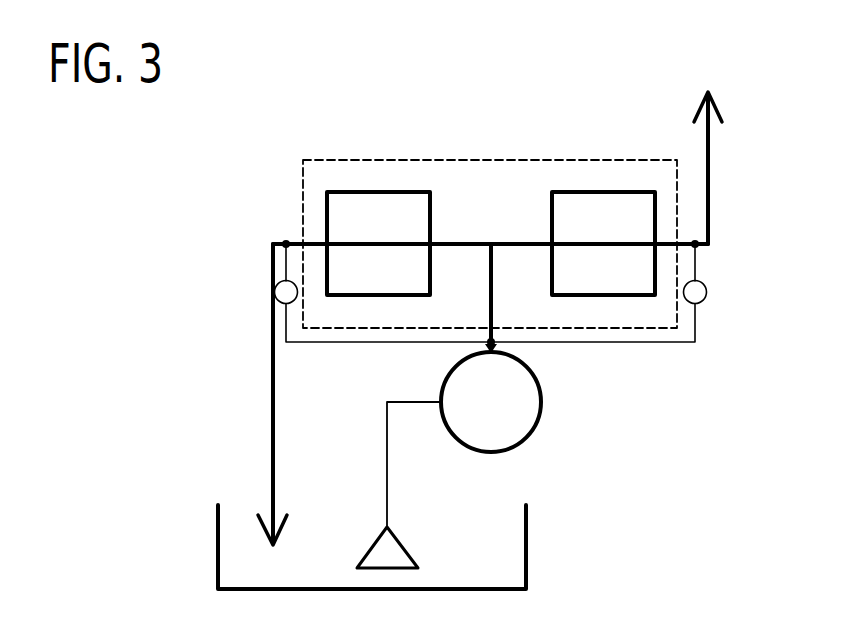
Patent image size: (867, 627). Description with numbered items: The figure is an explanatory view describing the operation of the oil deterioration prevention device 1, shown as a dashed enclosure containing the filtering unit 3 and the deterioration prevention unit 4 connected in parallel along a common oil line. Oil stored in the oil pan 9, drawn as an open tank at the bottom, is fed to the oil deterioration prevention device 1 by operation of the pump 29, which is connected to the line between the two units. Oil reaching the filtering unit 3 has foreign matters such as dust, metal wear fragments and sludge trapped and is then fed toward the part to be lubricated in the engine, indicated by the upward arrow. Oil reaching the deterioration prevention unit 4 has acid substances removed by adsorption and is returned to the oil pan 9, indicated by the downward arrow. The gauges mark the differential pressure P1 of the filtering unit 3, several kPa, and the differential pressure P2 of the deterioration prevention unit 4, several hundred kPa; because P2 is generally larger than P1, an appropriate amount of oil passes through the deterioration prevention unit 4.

The oil deterioration prevention device 1 is at (469, 151).
The filtering unit 3 is at (620, 192).
The deterioration prevention unit 4 is at (378, 192).
The oil pan 9 is at (527, 535).
The pump 29 is at (542, 408).
The differential pressure of the filtering unit P1 is at (707, 291).
The differential pressure of the deterioration prevention unit P2 is at (278, 289).